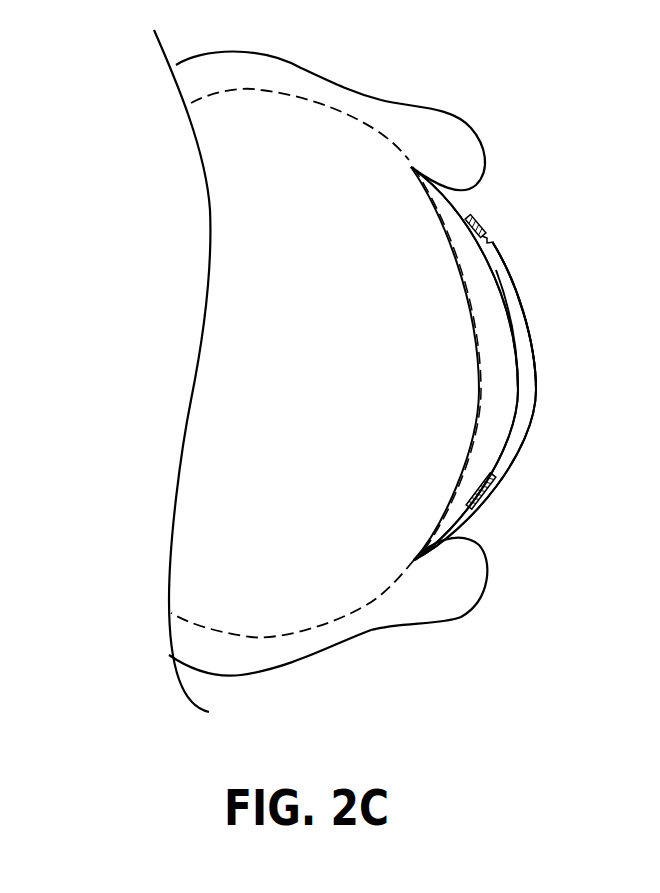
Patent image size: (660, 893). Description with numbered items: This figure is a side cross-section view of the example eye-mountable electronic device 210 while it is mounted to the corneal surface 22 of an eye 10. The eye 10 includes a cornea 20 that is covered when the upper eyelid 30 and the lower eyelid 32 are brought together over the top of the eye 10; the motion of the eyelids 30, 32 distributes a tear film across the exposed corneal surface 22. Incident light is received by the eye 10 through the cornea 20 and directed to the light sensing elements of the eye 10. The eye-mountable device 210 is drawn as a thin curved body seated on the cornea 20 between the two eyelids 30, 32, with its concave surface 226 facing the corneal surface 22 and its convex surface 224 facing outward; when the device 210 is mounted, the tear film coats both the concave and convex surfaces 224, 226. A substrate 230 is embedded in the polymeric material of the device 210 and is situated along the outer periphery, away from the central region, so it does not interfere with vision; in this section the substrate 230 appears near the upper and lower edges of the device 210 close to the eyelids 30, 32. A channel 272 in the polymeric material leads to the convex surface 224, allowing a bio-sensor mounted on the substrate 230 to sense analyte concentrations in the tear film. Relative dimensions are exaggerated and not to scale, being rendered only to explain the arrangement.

The eye 10 is at (378, 645).
The upper eyelid 30 is at (486, 134).
The lower eyelid 32 is at (486, 560).
The cornea 20 is at (493, 397).
The corneal surface 22 is at (508, 423).
The convex surface 224 is at (528, 309).
The concave surface 226 is at (518, 344).
The eye-mountable electronic device 210 is at (507, 262).
The substrate 230 is at (477, 223).
The channel 272 is at (494, 241).